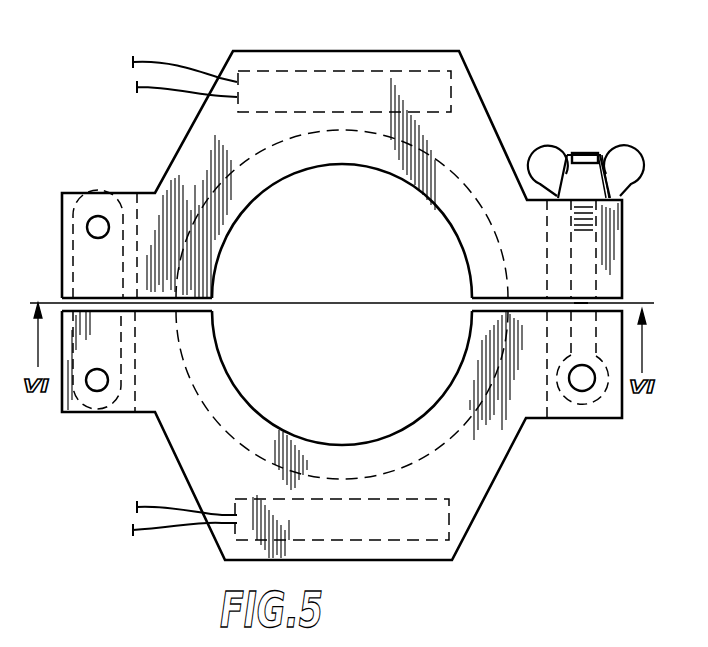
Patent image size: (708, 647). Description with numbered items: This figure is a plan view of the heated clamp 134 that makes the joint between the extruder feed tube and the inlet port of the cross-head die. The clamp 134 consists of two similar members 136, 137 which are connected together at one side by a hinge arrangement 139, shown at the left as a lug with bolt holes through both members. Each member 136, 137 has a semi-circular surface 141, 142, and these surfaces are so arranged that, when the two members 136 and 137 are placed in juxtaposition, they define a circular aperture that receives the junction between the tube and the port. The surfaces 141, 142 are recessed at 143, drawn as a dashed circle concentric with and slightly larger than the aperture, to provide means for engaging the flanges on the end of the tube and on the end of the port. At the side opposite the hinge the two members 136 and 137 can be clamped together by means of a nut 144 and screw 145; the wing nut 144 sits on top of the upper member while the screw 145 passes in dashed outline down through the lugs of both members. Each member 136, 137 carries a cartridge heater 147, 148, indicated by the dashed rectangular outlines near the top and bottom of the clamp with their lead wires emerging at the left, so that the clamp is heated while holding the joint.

The heated clamp 134 is at (509, 151).
The member 136 is at (186, 162).
The member 137 is at (482, 477).
The hinge arrangement 139 is at (80, 263).
The semi-circular surface 141 is at (243, 222).
The semi-circular surface 142 is at (262, 407).
The recess 143 is at (492, 240).
The nut 144 is at (616, 160).
The screw 145 is at (587, 266).
The cartridge heater 147 is at (357, 73).
The cartridge heater 148 is at (376, 533).